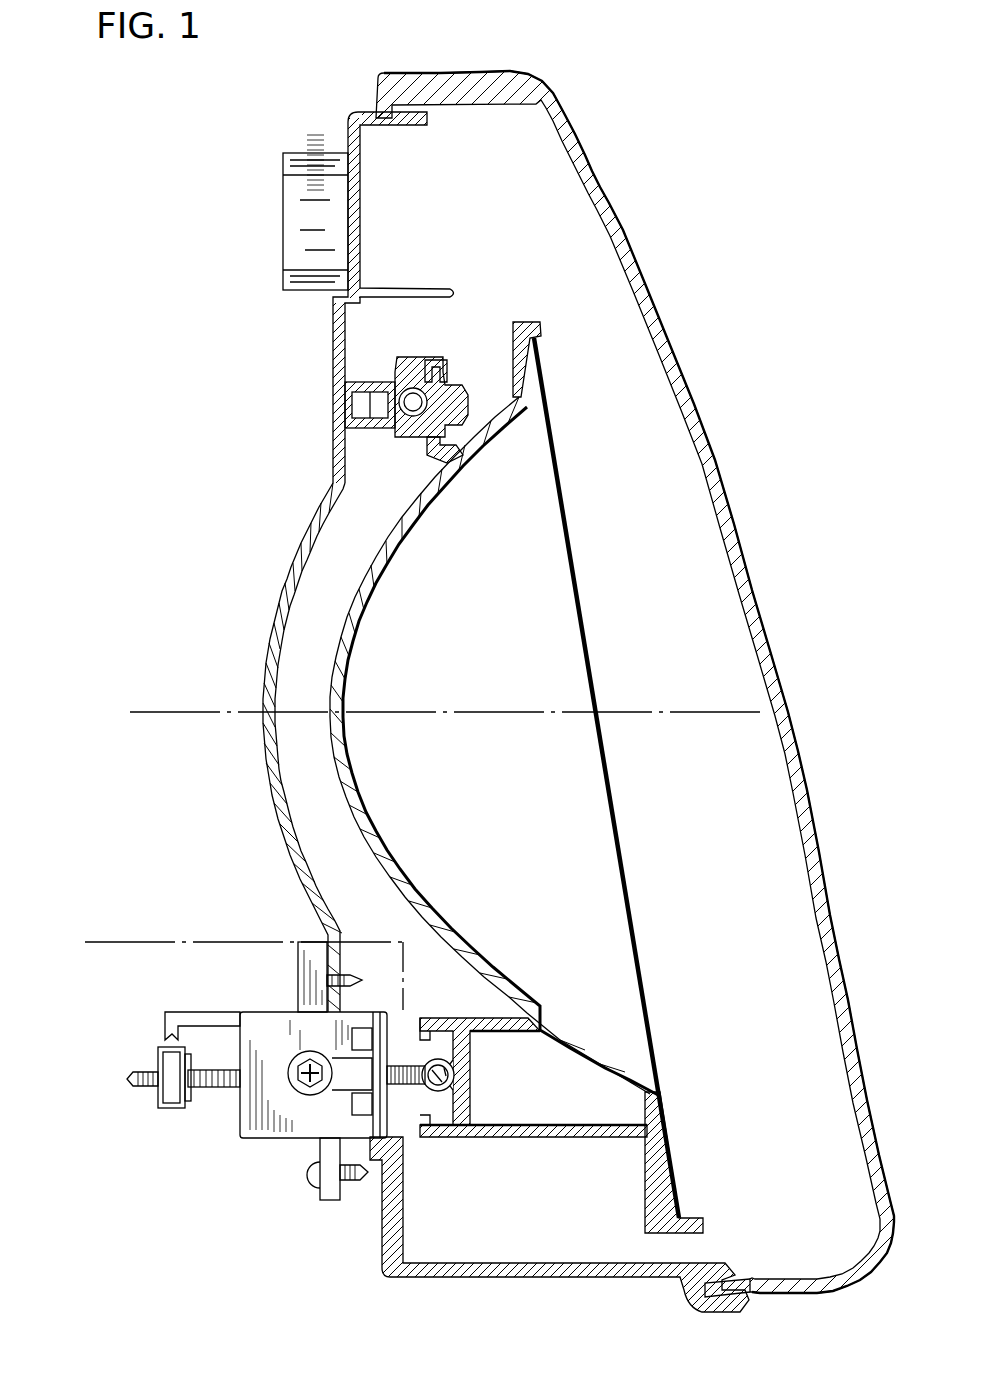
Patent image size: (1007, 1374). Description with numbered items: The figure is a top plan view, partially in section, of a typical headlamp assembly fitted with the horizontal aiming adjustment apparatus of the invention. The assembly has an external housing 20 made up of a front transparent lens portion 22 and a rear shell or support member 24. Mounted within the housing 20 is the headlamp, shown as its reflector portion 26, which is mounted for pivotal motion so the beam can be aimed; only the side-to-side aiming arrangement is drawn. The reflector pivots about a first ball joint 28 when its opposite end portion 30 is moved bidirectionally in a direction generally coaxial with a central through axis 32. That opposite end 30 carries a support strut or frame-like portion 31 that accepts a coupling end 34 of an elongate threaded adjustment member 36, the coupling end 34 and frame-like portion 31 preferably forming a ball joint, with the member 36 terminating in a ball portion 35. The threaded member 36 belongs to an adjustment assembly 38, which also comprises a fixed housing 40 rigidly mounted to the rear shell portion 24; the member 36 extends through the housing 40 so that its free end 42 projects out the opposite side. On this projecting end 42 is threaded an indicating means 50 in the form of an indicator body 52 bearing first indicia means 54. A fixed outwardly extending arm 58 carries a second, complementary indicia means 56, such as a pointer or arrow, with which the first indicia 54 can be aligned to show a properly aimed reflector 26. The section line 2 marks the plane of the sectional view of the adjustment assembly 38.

The external housing 20 is at (325, 97).
The front transparent lens portion 22 is at (580, 110).
The rear shell or support member 24 is at (293, 545).
The headlamp reflector portion 26 is at (545, 408).
The first ball joint 28 is at (413, 385).
The opposite end portion 30 is at (646, 1185).
The support strut or frame-like portion 31 is at (540, 1140).
The central through axis 32 is at (692, 715).
The coupling end 34 is at (437, 1062).
The ball portion 35 is at (462, 1130).
The elongate threaded adjustment member 36 is at (410, 1090).
The adjustment apparatus or assembly 38 is at (270, 1160).
The fixed member or housing 40 is at (262, 1030).
The free end 42 is at (133, 1080).
The indicating means 50 is at (155, 1120).
The indicator body 52 is at (158, 1052).
The first indicia means 54 is at (180, 1112).
The second complementary indicia means 56 is at (197, 1005).
The fixed outwardly extending arm 58 is at (168, 1015).
The section line 2- 2 is at (28, 960).